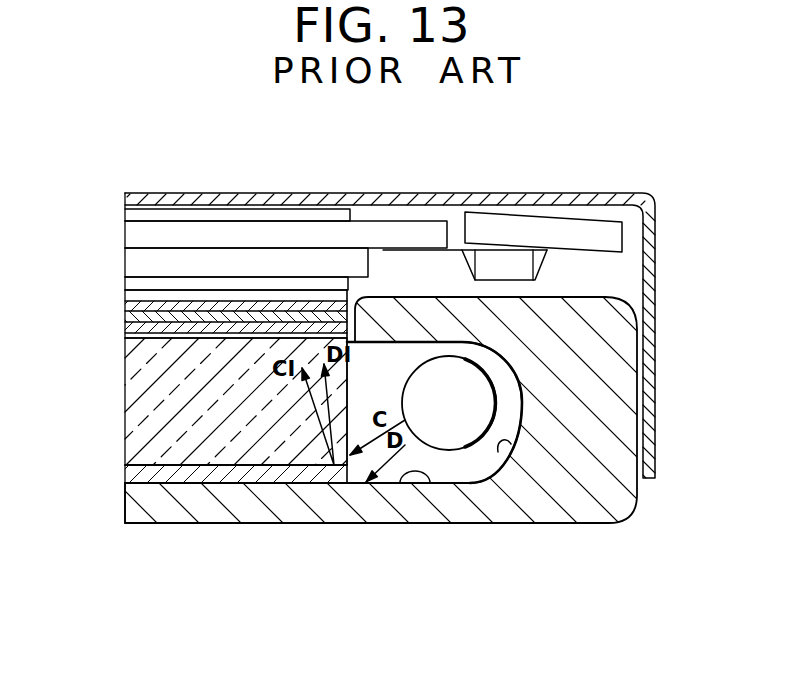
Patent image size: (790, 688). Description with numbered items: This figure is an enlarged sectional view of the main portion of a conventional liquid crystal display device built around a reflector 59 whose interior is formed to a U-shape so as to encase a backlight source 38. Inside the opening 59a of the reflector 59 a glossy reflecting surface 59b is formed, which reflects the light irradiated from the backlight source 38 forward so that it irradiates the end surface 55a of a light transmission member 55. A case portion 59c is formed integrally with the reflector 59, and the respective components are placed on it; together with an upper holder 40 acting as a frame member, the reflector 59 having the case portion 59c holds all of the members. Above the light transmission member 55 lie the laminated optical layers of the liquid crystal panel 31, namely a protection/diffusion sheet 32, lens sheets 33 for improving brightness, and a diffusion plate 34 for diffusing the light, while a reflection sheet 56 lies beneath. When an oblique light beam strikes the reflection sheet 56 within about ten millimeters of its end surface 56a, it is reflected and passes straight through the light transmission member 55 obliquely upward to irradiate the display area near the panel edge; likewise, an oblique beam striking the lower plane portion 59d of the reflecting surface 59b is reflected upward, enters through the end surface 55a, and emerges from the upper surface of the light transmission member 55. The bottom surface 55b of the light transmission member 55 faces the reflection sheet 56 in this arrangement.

The liquid crystal panel 31 is at (120, 203).
The protection/diffusion sheet 32 is at (127, 295).
The lens sheets 33 is at (127, 312).
The diffusion plate 34 is at (127, 334).
The backlight source 38 is at (445, 405).
The upper holder 40 is at (630, 193).
The light transmission member 55 is at (160, 424).
The end surface of light transmission member 55a is at (350, 392).
The bottom surface of pressing member 55b is at (163, 475).
The reflection sheet 56 is at (137, 474).
The end surface of reflection sheet 56a is at (333, 488).
The reflector 59 is at (624, 517).
The opening of reflector 59a is at (402, 375).
The reflecting surface 59b is at (500, 450).
The case portion 59c is at (245, 505).
The lower plane portion 59d is at (428, 485).